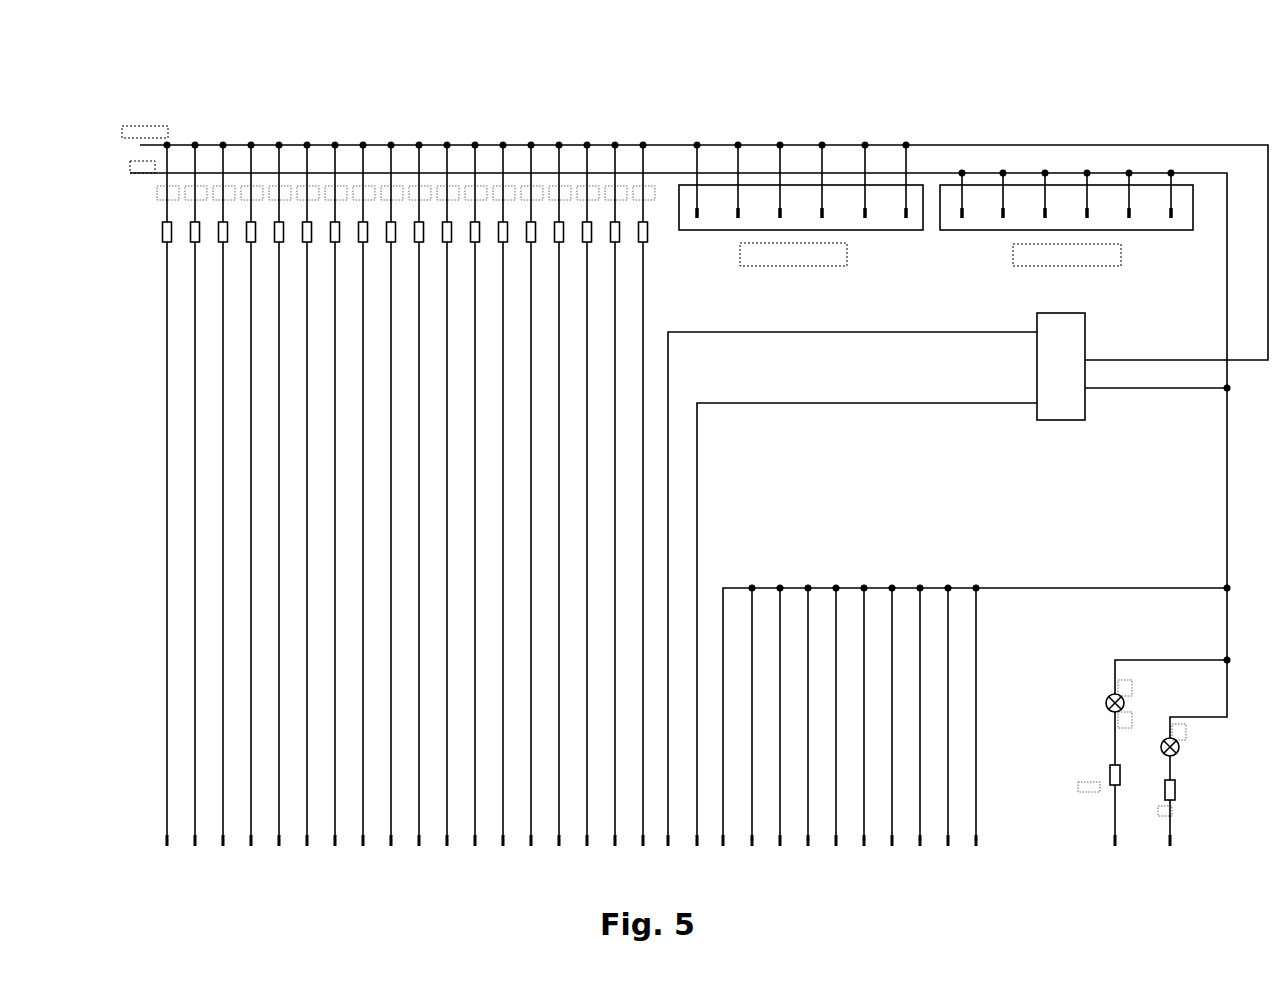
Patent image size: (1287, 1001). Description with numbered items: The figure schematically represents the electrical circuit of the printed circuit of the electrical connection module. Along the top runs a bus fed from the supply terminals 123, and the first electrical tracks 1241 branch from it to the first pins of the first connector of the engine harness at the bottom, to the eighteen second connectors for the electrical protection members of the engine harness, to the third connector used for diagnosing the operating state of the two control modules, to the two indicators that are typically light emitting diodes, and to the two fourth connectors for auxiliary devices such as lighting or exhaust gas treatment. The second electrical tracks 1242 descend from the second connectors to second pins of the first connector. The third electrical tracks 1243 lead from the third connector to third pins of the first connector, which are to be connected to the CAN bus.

The supply terminals 123 is at (673, 486).
The first electrical tracks 1241 is at (666, 122).
The second electrical tracks 1242 is at (158, 598).
The third electrical tracks 1243 is at (718, 442).